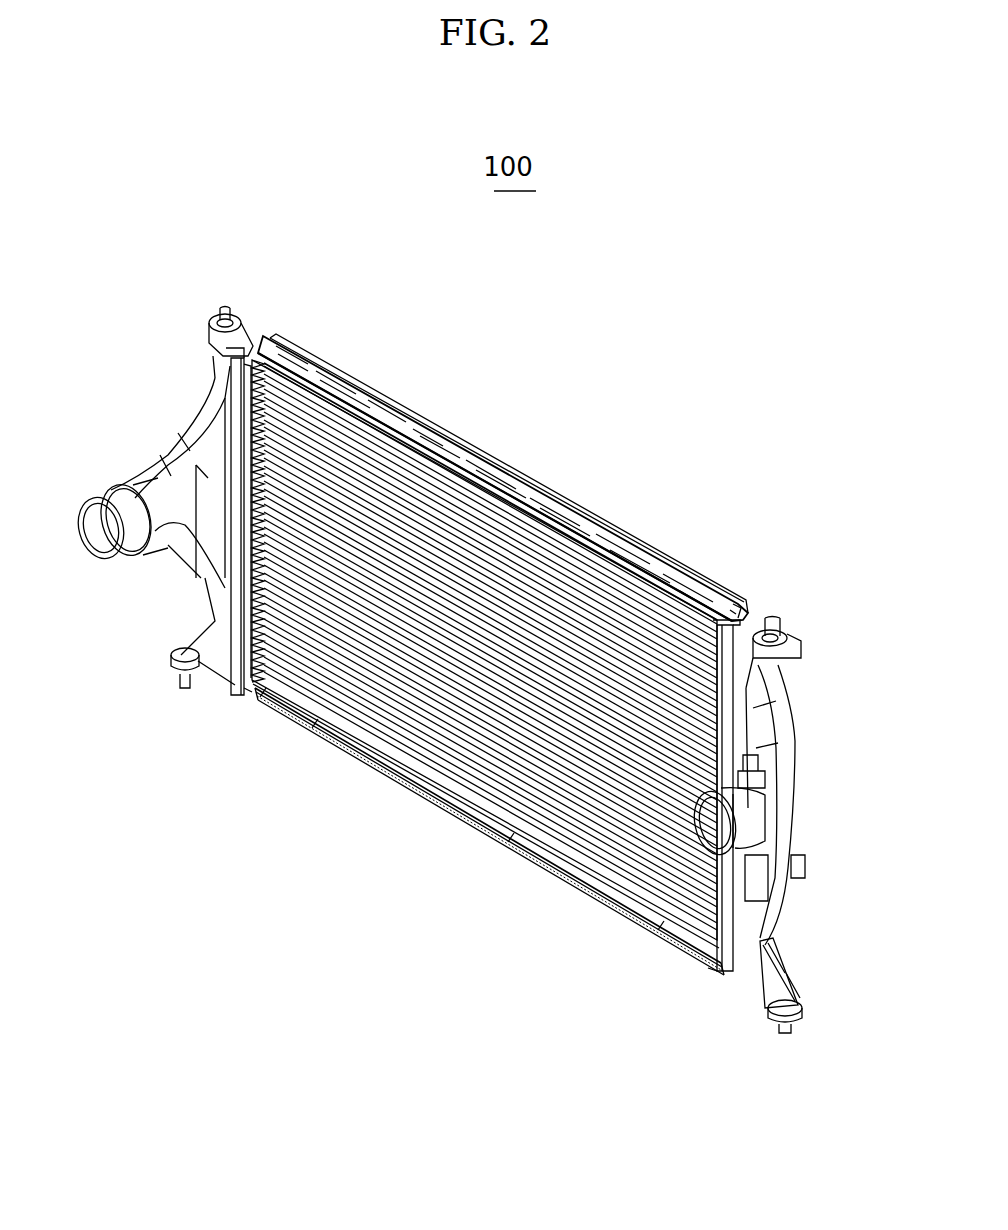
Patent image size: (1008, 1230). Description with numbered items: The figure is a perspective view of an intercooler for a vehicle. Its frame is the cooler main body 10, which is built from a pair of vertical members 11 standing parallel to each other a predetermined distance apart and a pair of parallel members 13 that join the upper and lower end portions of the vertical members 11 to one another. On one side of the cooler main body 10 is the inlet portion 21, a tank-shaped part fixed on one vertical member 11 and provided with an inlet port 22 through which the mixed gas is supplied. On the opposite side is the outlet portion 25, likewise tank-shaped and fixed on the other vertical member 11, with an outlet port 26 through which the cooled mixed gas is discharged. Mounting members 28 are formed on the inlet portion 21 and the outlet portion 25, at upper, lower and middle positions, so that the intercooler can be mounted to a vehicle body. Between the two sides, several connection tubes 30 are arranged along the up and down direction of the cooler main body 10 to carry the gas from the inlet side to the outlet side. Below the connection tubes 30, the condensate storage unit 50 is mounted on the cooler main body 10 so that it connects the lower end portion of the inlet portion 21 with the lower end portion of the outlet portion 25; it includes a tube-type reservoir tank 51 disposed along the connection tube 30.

The cooler main body 10 is at (748, 590).
The vertical members 11 is at (230, 670).
The parallel members 13 is at (527, 497).
The inlet portion 21 is at (800, 810).
The inlet port 22 is at (707, 823).
The outlet portion 25 is at (157, 548).
The outlet port 26 is at (93, 527).
The mounting members 28 is at (205, 318).
The connection tubes 30 is at (290, 415).
The condensate storage unit 50 is at (413, 785).
The reservoir tank 51 is at (478, 805).